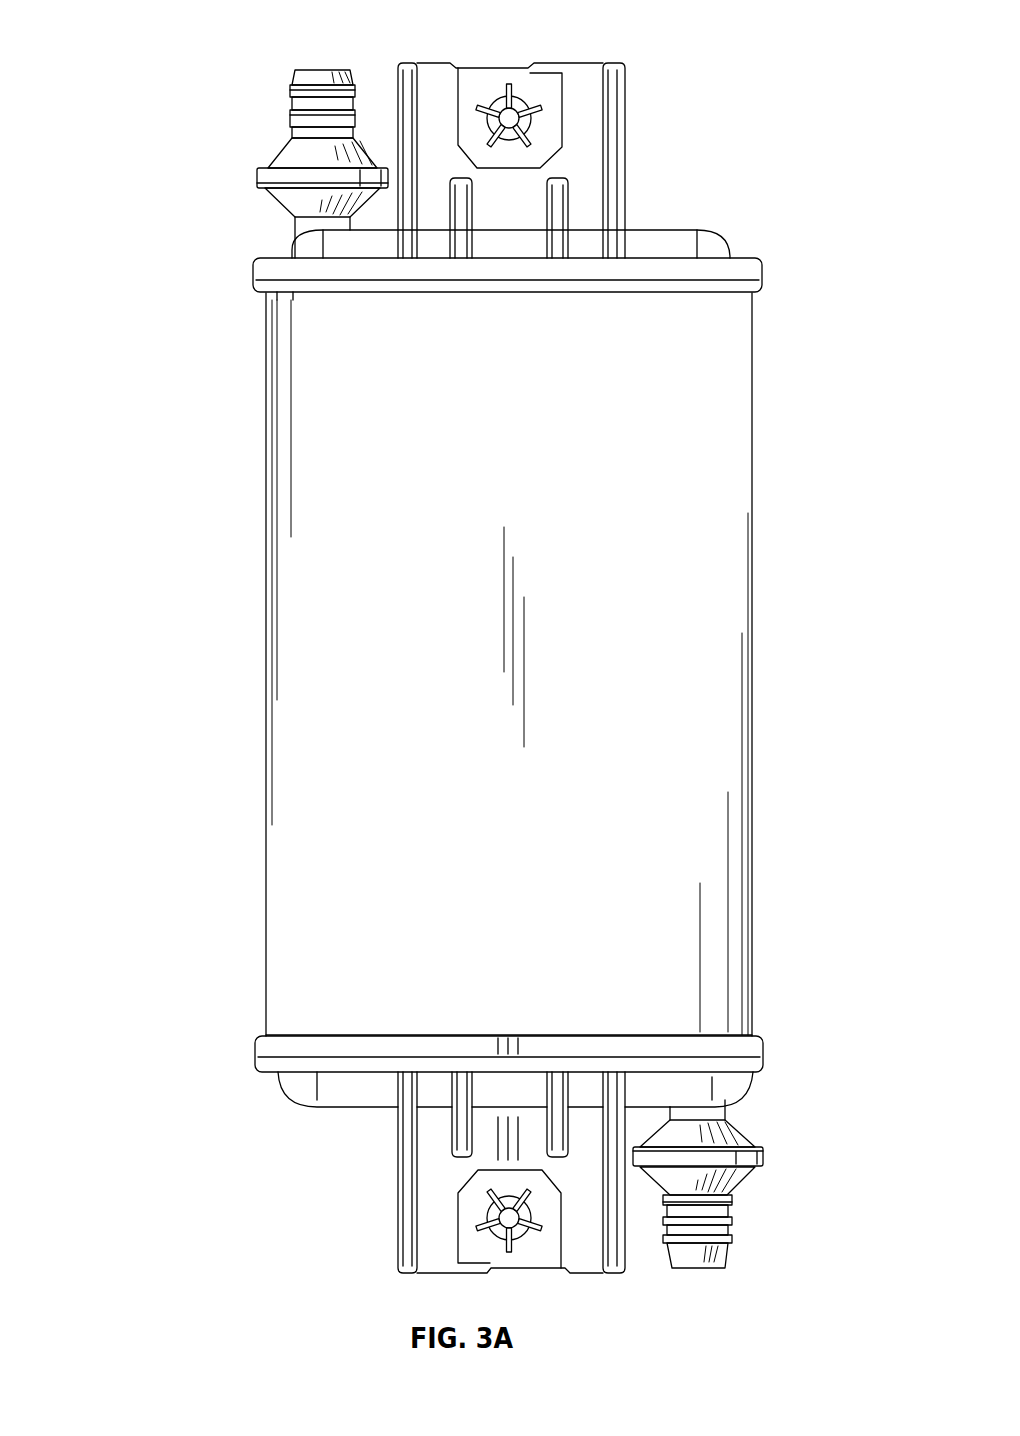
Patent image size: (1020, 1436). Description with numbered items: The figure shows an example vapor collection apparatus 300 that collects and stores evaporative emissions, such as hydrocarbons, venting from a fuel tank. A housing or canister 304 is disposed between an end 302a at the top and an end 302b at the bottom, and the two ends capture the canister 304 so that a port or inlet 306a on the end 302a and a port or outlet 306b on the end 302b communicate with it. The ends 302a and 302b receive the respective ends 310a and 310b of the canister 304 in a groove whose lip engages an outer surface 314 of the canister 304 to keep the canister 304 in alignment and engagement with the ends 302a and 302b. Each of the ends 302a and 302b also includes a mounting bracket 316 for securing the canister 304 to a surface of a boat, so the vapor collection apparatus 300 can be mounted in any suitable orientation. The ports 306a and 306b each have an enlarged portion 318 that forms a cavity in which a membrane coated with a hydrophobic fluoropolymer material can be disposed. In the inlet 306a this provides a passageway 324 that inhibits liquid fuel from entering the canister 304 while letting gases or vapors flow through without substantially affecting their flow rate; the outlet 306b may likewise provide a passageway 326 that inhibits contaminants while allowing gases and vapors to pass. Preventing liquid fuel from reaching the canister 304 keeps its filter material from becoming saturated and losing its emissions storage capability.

The vapor collection apparatus 300 is at (155, 28).
The end 302a is at (762, 276).
The end 302b is at (253, 1058).
The canister 304 is at (753, 521).
The inlet 306a is at (258, 180).
The outlet 306b is at (763, 1156).
The end of canister 310a is at (744, 381).
The end of canister 310b is at (744, 945).
The surface 314 is at (267, 576).
The mounting brackets 316 is at (430, 63).
The enlarged portion 318 is at (283, 152).
The passageway 324 is at (320, 68).
The passageway 326 is at (702, 1268).